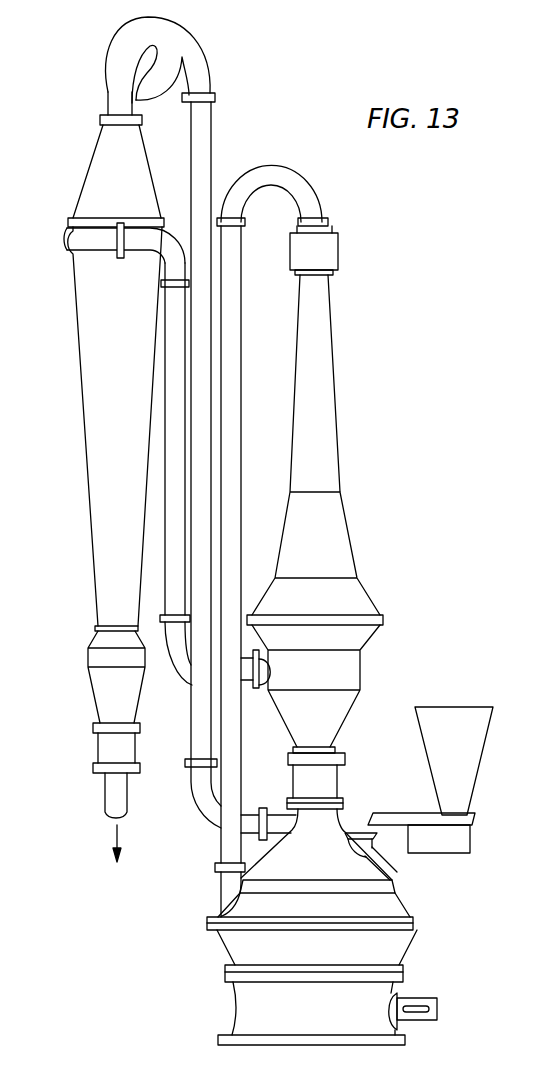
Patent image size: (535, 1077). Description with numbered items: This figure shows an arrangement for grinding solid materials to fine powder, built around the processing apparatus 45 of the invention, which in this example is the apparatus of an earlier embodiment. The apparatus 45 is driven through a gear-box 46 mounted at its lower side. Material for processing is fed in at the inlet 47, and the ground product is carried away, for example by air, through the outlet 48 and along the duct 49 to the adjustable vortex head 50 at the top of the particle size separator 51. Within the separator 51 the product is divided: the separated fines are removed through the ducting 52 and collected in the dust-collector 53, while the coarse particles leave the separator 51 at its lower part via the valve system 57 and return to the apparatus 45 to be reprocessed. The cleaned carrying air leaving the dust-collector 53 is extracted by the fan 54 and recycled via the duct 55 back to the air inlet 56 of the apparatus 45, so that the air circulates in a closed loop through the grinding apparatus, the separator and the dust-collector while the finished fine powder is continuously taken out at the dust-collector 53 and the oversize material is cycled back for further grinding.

The processing apparatus 45 is at (228, 952).
The gear-box 46 is at (400, 993).
The inlet 47 is at (365, 846).
The outlet 48 is at (230, 890).
The duct 49 is at (233, 557).
The adjustable vortex head 50 is at (338, 255).
The particle size separator 51 is at (362, 606).
The ducting 52 is at (172, 560).
The dust-collector 53 is at (88, 310).
The fan 54 is at (175, 42).
The duct 55 is at (212, 162).
The air inlet 56 is at (264, 806).
The valve system 57 is at (336, 781).